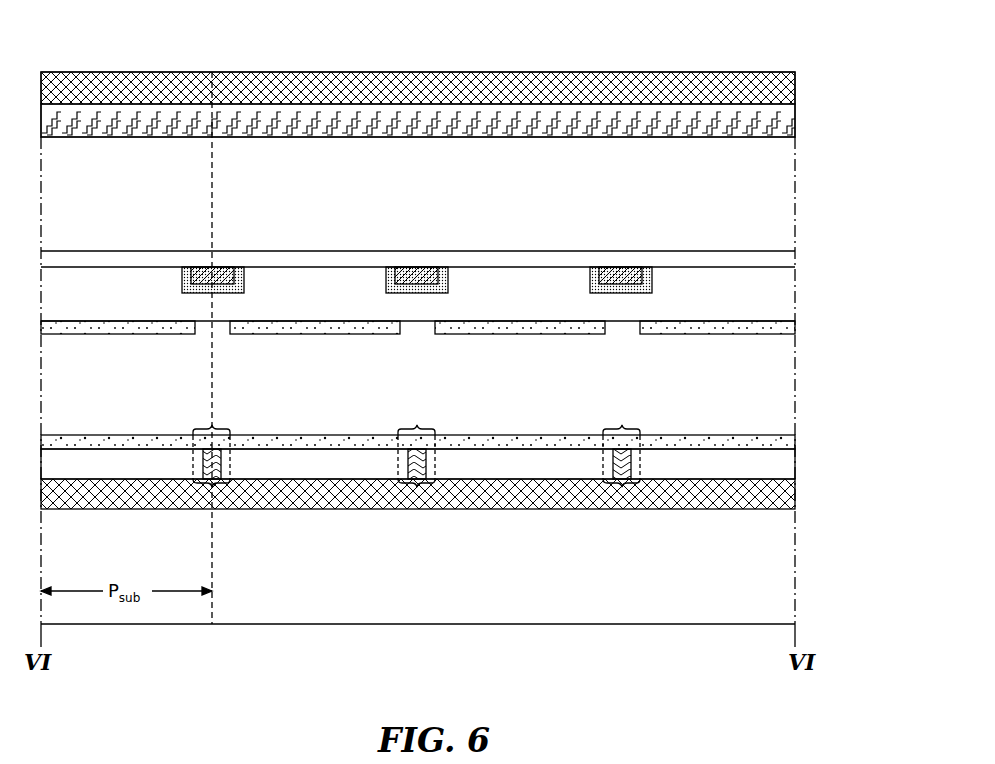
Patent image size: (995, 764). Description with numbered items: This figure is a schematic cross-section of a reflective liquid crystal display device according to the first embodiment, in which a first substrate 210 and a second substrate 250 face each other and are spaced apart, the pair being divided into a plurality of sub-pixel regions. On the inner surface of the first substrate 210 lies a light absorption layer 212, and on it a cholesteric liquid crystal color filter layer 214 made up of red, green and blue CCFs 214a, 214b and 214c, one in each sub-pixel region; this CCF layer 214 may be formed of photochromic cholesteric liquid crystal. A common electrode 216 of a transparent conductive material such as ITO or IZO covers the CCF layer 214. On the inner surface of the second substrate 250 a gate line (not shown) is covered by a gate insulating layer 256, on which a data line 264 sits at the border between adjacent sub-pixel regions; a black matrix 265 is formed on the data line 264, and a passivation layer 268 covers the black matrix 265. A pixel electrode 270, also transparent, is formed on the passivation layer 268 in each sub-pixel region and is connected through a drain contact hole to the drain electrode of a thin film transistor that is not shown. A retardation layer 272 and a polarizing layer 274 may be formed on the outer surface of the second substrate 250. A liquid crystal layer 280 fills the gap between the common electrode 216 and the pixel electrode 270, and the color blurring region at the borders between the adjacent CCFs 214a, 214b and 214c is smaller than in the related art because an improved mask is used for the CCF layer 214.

The first substrate 210 is at (778, 546).
The light absorption layer 212 is at (786, 498).
The cholesteric liquid crystal color filter layer 214 is at (797, 449).
The red cholesteric liquid crystal color filter 214a is at (700, 470).
The green cholesteric liquid crystal color filter 214b is at (293, 470).
The blue cholesteric liquid crystal color filter 214c is at (502, 470).
The common electrode 216 is at (86, 444).
The second substrate 250 is at (778, 176).
The gate insulating layer 256 is at (126, 259).
The data line 264 is at (200, 271).
The black matrix 265 is at (238, 269).
The passivation layer 268 is at (778, 298).
The pixel electrode 270 is at (132, 332).
The retardation layer 272 is at (521, 286).
The polarizing layer 274 is at (187, 84).
The liquid crystal layer 280 is at (778, 384).